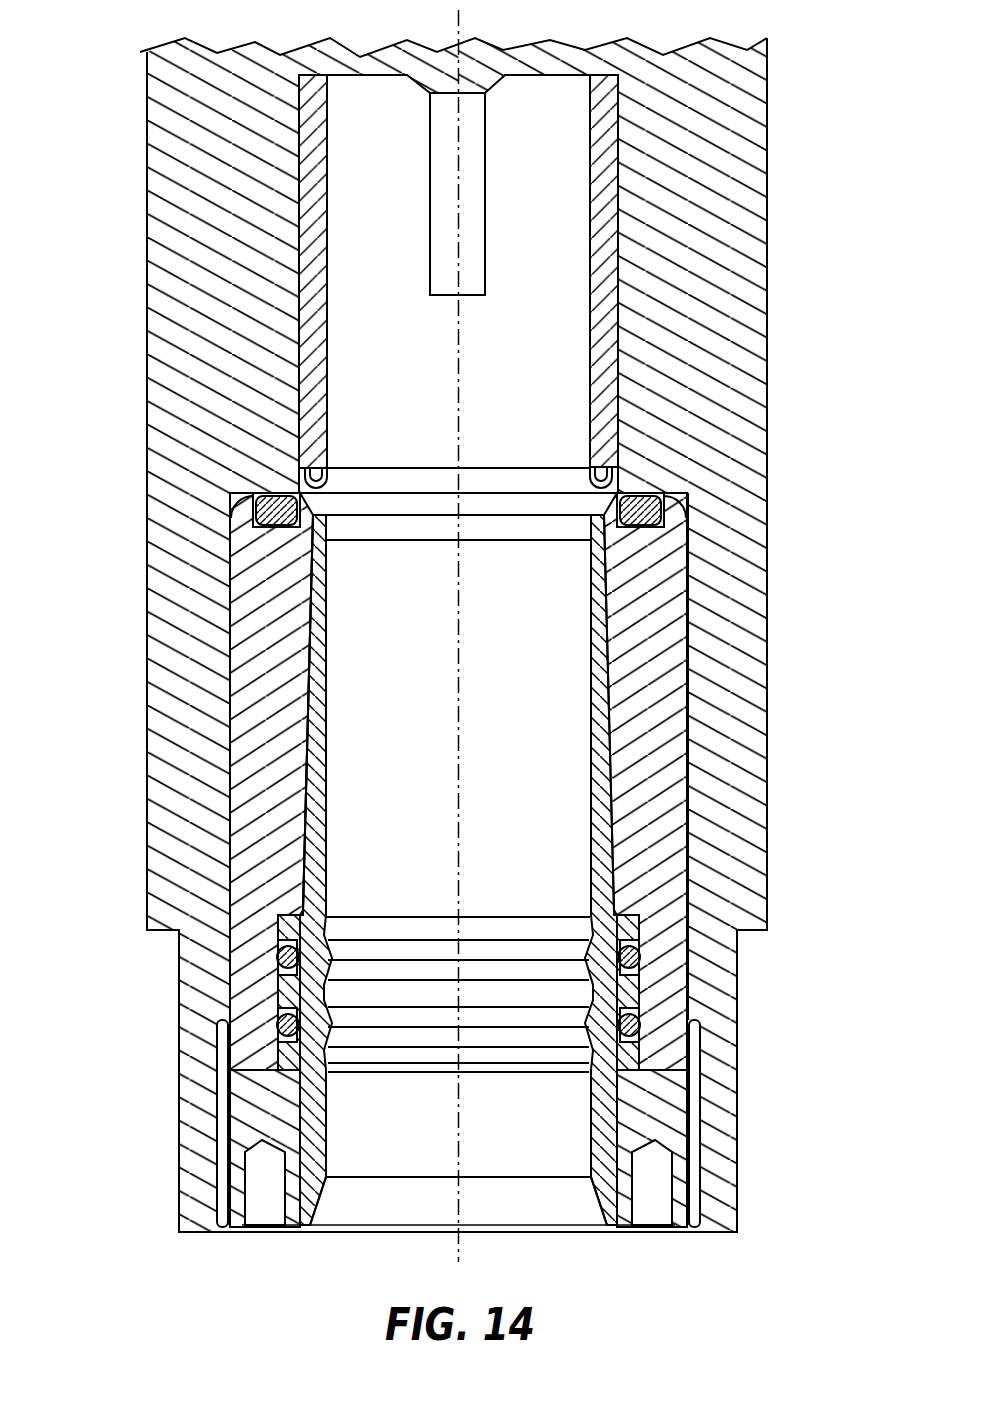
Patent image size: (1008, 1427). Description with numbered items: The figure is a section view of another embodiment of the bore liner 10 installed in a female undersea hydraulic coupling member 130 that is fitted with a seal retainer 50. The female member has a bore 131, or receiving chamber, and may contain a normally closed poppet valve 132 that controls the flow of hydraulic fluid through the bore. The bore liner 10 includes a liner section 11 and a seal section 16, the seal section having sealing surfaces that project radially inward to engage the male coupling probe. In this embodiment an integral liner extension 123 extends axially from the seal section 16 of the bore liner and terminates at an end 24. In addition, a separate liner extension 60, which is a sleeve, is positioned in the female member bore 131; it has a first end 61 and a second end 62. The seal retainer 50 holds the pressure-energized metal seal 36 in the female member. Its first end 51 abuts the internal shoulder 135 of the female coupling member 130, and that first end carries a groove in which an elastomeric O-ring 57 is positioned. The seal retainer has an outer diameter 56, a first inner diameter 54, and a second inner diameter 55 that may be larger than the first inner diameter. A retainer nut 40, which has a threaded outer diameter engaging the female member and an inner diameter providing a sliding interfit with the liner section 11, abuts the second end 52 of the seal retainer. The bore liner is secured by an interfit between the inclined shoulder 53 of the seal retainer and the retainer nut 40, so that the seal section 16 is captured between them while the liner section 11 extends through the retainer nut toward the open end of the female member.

The bore liner 10 is at (270, 992).
The liner section 11 is at (323, 1127).
The seal section 16 is at (233, 1045).
The end 24 is at (330, 490).
The pressure-energized metal seal 36 is at (590, 483).
The retainer nut 40 is at (677, 1112).
The seal retainer 50 is at (673, 598).
The first end 51 is at (676, 492).
The second end 52 is at (670, 1080).
The inclined shoulder 53 is at (608, 952).
The first inner diameter 54 is at (602, 740).
The second inner diameter 55 is at (645, 1000).
The outer diameter 56 is at (695, 632).
The elastomeric O-ring 57 is at (663, 505).
The liner extension 60 is at (312, 141).
The first end 61 is at (312, 75).
The second end 62 is at (298, 483).
The integral liner extension 123 is at (298, 682).
The female undersea hydraulic coupling member 130 is at (756, 180).
The bore 131 is at (562, 88).
The normally closed poppet valve 132 is at (473, 147).
The internal shoulder 135 is at (228, 508).